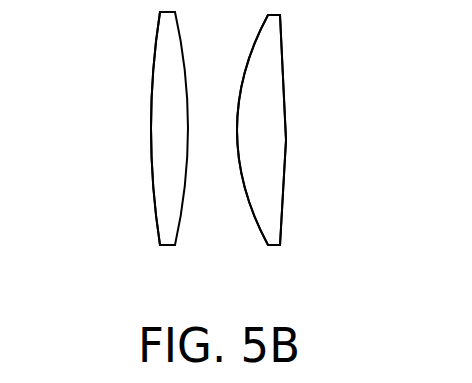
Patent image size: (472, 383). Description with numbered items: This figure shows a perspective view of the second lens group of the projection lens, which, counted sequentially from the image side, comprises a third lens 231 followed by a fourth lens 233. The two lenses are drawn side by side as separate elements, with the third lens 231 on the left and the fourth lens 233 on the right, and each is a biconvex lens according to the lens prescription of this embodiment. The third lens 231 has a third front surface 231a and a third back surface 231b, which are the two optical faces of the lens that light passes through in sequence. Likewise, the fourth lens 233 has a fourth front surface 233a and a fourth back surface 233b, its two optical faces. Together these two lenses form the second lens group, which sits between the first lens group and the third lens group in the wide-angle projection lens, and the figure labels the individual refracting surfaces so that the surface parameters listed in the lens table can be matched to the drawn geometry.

The third lens 231 is at (160, 24).
The third front surface 231a is at (152, 220).
The third back surface 231b is at (182, 249).
The fourth lens 233 is at (280, 38).
The fourth front surface 233a is at (258, 228).
The fourth back surface 233b is at (284, 230).